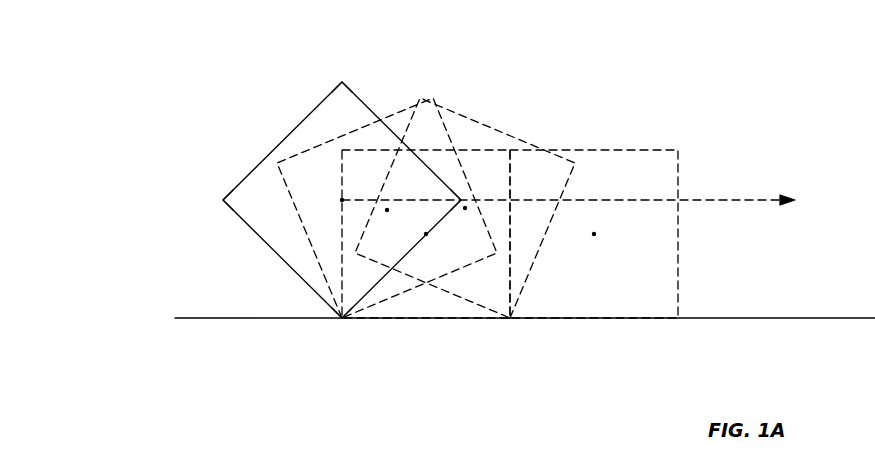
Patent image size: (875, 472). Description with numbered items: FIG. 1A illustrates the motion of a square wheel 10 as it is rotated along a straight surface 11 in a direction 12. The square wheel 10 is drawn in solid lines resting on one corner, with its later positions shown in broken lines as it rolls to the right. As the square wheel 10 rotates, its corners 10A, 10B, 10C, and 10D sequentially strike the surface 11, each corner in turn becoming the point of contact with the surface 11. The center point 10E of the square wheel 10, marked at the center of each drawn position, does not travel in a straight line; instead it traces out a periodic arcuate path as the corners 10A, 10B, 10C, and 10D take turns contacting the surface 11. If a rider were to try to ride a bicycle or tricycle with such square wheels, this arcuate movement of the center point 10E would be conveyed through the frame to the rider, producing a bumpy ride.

The square wheel 10 is at (303, 82).
The corner 10A is at (342, 318).
The corner 10B is at (461, 200).
The corner 10C is at (342, 82).
The corner 10D is at (222, 200).
The center point 10E is at (342, 200).
The straight surface 11 is at (795, 319).
The direction 12 is at (725, 200).